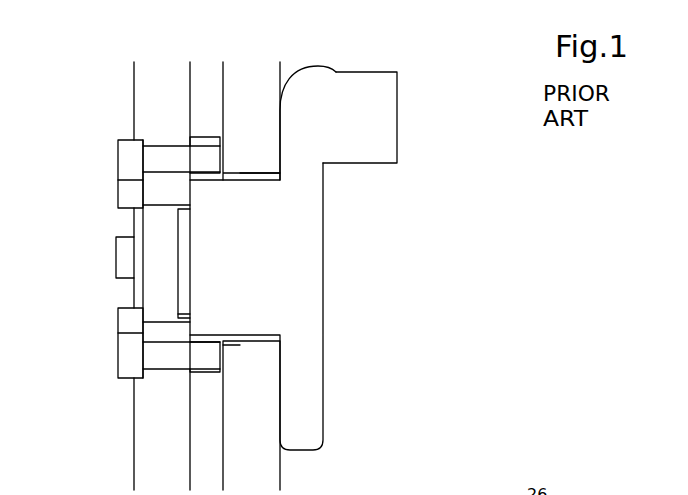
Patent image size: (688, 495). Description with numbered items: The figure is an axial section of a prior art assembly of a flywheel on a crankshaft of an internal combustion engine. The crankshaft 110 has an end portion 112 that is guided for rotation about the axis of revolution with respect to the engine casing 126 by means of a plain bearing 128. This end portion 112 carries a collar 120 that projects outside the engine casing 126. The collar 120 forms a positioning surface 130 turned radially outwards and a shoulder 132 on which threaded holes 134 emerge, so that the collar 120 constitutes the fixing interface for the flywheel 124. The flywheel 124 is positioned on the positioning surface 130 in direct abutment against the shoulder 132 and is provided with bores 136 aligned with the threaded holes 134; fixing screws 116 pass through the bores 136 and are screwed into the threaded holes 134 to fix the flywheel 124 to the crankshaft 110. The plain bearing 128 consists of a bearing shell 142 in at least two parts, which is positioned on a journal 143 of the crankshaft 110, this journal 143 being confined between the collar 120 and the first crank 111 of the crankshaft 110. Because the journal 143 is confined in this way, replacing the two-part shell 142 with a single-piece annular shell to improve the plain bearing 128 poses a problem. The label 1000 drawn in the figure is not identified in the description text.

The crankshaft 110 is at (300, 220).
The first crank 111 is at (375, 132).
The end portion 112 is at (202, 282).
The fixing screws 116 is at (119, 140).
The collar 120 is at (192, 142).
The flywheel 124 is at (134, 462).
The engine casing 126 is at (258, 71).
The plain bearing 128 is at (270, 360).
The positioning surface 130 is at (178, 210).
The shoulder 132 is at (190, 316).
The threaded holes 134 is at (212, 136).
The bores 136 is at (144, 140).
The bearing shell 142 is at (238, 345).
The journal 143 is at (255, 168).
The spacer 1000 is at (178, 258).